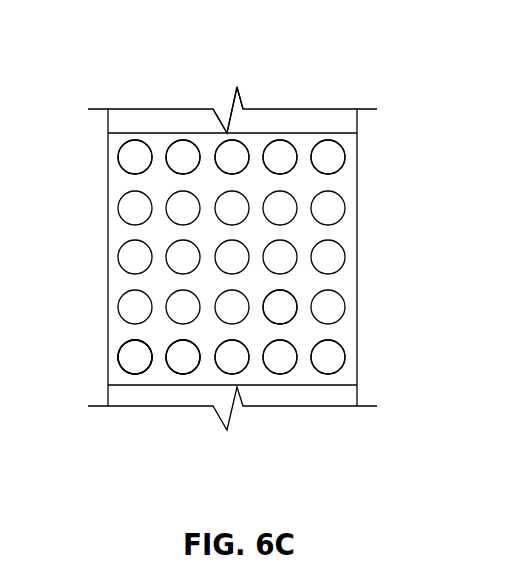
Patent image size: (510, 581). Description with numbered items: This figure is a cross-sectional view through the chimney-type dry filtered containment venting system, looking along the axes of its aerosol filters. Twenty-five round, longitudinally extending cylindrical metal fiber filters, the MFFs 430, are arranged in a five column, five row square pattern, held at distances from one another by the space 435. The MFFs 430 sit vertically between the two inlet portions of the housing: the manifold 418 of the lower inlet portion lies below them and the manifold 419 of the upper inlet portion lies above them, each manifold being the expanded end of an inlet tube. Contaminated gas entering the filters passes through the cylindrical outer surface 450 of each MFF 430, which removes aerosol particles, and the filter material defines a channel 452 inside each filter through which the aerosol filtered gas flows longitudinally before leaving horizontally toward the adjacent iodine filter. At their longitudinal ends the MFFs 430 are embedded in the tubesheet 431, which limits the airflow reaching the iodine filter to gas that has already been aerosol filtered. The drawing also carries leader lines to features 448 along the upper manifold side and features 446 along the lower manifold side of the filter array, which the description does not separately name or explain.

The manifold 418 is at (282, 395).
The manifold 419 is at (332, 121).
The MFF 430 is at (127, 162).
The tubesheet 431 is at (347, 180).
The space 435 is at (234, 88).
The lower connectors 446 is at (140, 378).
The upper connectors 448 is at (135, 140).
The cylindrical outer surface 450 is at (120, 365).
The channel 452 is at (122, 377).